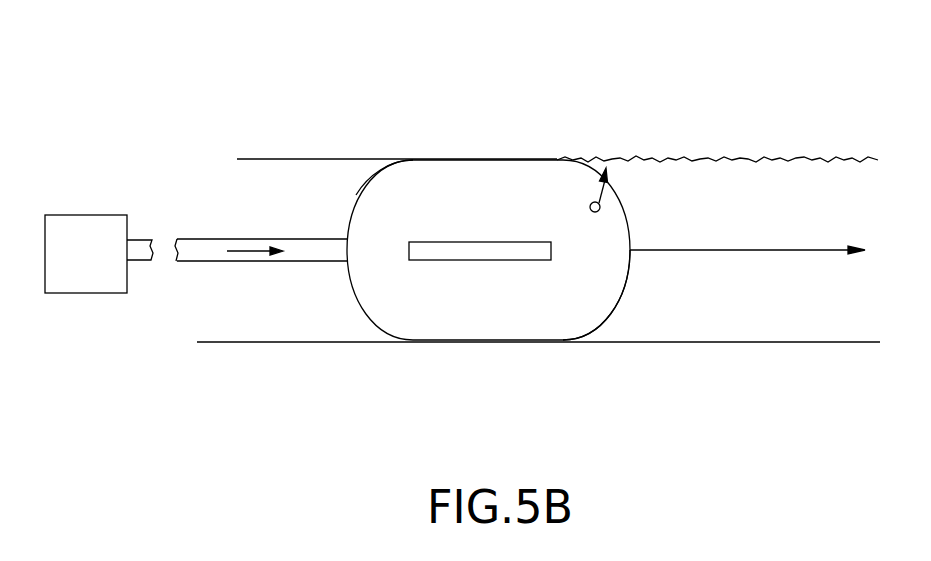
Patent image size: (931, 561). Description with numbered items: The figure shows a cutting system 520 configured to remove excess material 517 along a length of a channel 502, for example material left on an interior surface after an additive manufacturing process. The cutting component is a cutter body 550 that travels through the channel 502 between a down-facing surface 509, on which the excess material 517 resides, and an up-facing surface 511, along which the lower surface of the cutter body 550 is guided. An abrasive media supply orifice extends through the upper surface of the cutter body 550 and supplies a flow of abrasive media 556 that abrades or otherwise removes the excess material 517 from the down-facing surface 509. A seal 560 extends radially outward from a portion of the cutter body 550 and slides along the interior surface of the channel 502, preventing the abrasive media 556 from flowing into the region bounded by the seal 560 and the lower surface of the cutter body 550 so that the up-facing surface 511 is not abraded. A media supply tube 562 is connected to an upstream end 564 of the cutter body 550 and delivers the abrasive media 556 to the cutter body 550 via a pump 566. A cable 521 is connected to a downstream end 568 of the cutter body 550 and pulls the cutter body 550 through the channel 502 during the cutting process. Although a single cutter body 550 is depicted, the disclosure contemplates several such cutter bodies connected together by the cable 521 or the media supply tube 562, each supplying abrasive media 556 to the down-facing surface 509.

The channel 502 is at (771, 120).
The down-facing surface 509 is at (820, 156).
The up-facing surface 511 is at (790, 342).
The excess material 517 is at (702, 160).
The cutting system 520 is at (403, 72).
The cable 521 is at (793, 250).
The cutter body 550 is at (530, 181).
The abrasive media 556 is at (245, 250).
The seal 560 is at (533, 253).
The media supply tube 562 is at (297, 238).
The upstream end 564 is at (370, 186).
The pump 566 is at (107, 240).
The downstream end 568 is at (620, 260).